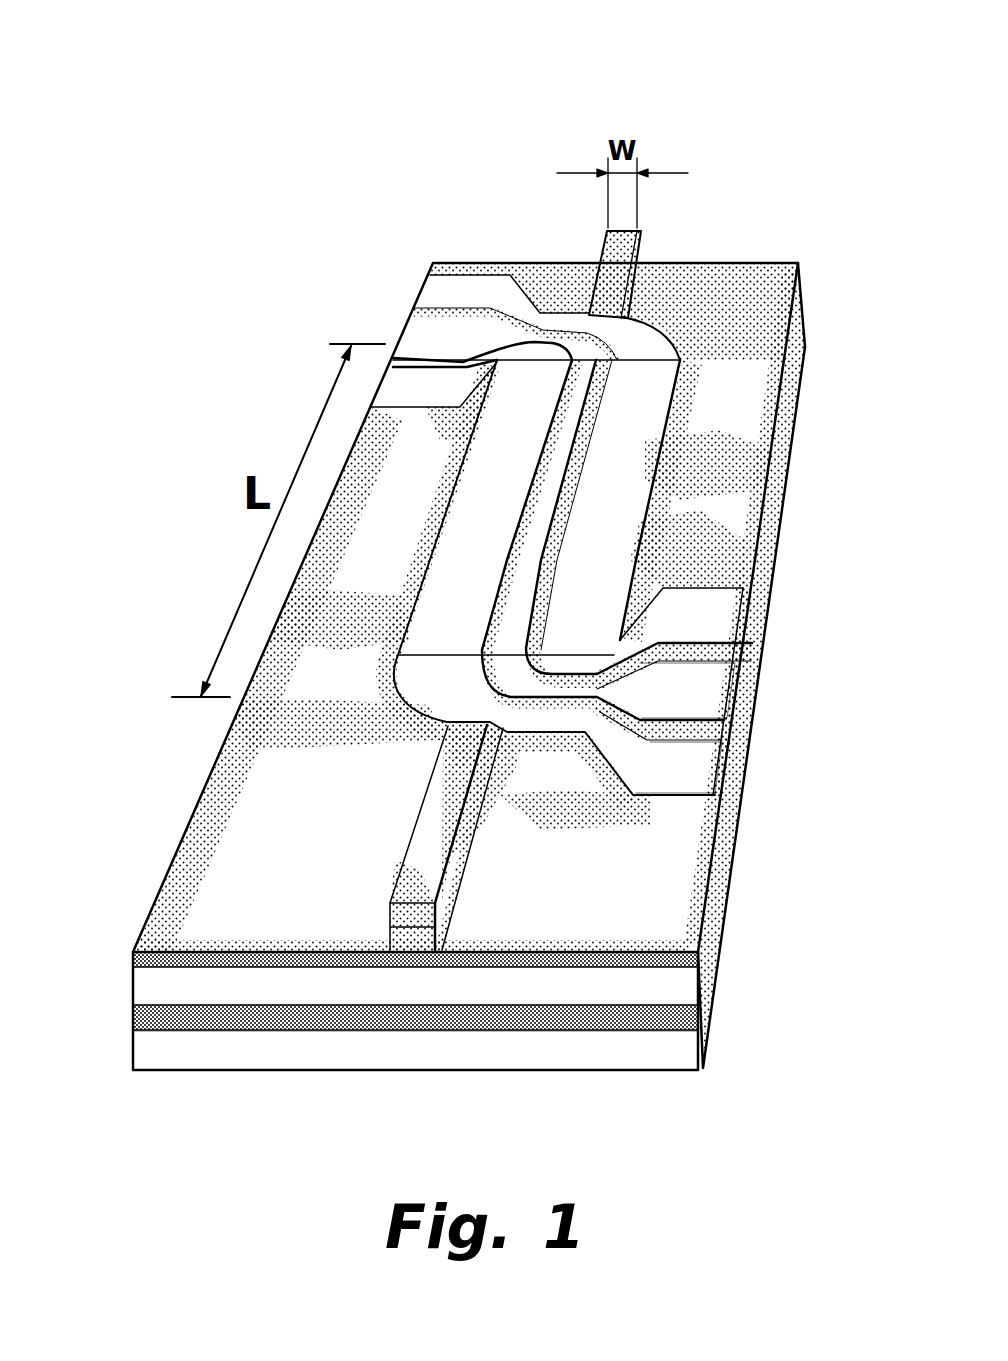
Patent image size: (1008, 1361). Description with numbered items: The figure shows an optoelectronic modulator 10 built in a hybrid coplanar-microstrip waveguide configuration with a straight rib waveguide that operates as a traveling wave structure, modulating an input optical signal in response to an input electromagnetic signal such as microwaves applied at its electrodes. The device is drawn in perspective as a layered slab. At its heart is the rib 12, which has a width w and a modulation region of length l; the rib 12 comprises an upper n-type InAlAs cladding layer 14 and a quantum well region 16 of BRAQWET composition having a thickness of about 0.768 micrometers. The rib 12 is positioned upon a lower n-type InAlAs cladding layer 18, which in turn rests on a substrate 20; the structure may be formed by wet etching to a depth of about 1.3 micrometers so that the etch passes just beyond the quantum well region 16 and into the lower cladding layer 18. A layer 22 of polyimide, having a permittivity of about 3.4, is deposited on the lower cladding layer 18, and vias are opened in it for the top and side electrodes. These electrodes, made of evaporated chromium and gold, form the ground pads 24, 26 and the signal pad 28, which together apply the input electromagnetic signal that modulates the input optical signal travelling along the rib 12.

The optoelectronic modulator 10 is at (265, 200).
The rib 12 is at (432, 817).
The upper n-type InAlAs cladding layer 14 is at (400, 917).
The quantum well region 16 is at (420, 940).
The lower n-type InAlAs cladding layer 18 is at (142, 988).
The substrate 20 is at (142, 1050).
The layer of polyimide 22 is at (698, 952).
The ground pad 24 is at (727, 613).
The ground pad 26 is at (713, 692).
The signal pad 28 is at (700, 777).